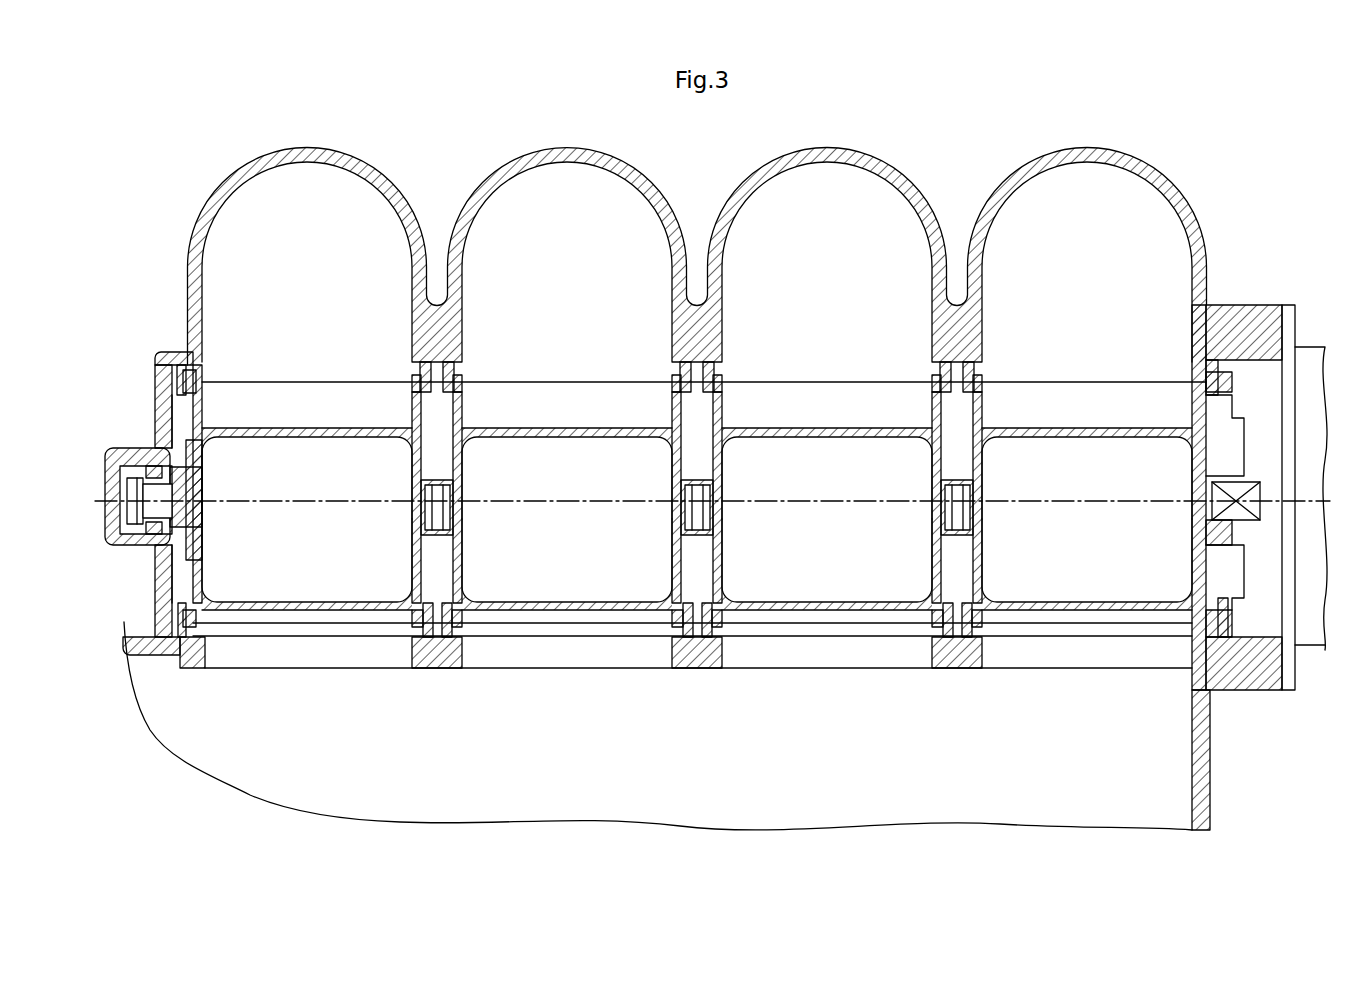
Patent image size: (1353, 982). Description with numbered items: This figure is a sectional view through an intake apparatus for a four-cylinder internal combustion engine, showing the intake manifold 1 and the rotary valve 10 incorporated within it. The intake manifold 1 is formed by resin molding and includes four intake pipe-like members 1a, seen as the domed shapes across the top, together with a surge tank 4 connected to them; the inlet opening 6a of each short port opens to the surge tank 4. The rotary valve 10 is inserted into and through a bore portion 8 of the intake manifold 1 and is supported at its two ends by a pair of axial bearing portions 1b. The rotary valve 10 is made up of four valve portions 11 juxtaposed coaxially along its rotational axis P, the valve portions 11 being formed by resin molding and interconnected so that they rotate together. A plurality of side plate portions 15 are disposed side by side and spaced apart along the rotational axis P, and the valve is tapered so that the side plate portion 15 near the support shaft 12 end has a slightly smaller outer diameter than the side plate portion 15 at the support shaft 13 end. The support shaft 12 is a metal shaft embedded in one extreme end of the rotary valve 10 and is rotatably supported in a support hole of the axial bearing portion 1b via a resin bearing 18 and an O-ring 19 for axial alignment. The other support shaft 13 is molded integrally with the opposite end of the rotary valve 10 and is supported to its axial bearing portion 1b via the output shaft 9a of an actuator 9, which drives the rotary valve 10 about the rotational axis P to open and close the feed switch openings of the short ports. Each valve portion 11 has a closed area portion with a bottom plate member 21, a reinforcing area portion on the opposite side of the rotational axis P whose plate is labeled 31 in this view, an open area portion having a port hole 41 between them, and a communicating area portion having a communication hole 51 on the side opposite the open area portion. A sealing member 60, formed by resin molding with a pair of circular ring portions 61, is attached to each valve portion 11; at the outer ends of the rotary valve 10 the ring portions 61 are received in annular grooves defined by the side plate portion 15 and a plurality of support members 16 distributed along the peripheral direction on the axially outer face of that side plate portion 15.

The intake manifold 1 is at (222, 172).
The intake pipe-like member 1a is at (468, 203).
The axial bearing portion 1b is at (157, 365).
The surge tank 4 is at (720, 791).
The inlet opening 6a is at (462, 670).
The bore portion 8 is at (466, 348).
The actuator 9 is at (1312, 648).
The output shaft 9a is at (1222, 500).
The rotary valve 10 is at (183, 412).
The valve portion 11 is at (316, 626).
The support shaft 12 is at (128, 503).
The support shaft 13 is at (1245, 482).
The side plate portion 15 is at (204, 470).
The support member 16 is at (183, 378).
The resin bearing 18 is at (152, 533).
The O-ring 19 is at (152, 467).
The bottom plate member 21 is at (340, 440).
The lower cap plate 31 is at (300, 603).
The port hole 41 is at (704, 398).
The communication hole 51 is at (300, 457).
The sealing member 60 is at (182, 368).
The ring portion 61 is at (652, 350).
The rotational axis P is at (304, 503).